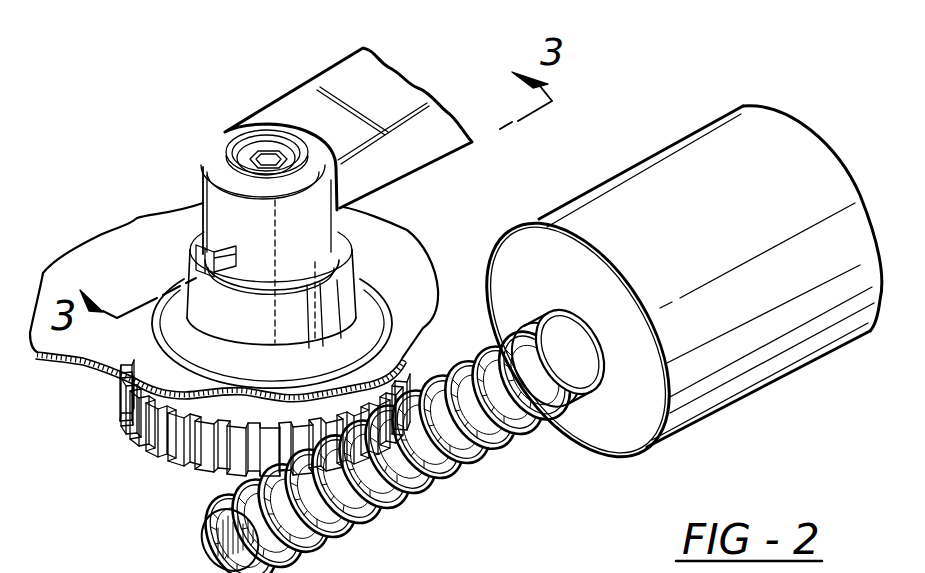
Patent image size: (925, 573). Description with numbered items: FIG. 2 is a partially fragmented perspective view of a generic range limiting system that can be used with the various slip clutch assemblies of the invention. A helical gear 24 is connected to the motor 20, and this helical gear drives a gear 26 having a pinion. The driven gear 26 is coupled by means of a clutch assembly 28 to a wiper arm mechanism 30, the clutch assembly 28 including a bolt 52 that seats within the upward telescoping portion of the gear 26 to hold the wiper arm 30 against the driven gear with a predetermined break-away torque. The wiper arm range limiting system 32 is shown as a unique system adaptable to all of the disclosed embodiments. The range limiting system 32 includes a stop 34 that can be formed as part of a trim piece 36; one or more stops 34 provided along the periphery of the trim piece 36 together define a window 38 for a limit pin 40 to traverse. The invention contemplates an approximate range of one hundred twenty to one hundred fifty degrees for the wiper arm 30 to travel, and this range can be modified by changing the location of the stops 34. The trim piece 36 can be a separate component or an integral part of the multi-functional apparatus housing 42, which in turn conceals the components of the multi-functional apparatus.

The motor 20 is at (650, 185).
The helical gear 24 is at (490, 443).
The gear 26 is at (167, 427).
The clutch assembly 28 is at (165, 472).
The wiper arm mechanism 30 is at (348, 73).
The wiper arm range limiting system 32 is at (158, 84).
The stop 34 is at (205, 222).
The trim piece 36 is at (337, 284).
The window 38 is at (323, 229).
The limit pin 40 is at (108, 353).
The multi-functional apparatus housing 42 is at (137, 248).
The bolt 52 is at (256, 152).